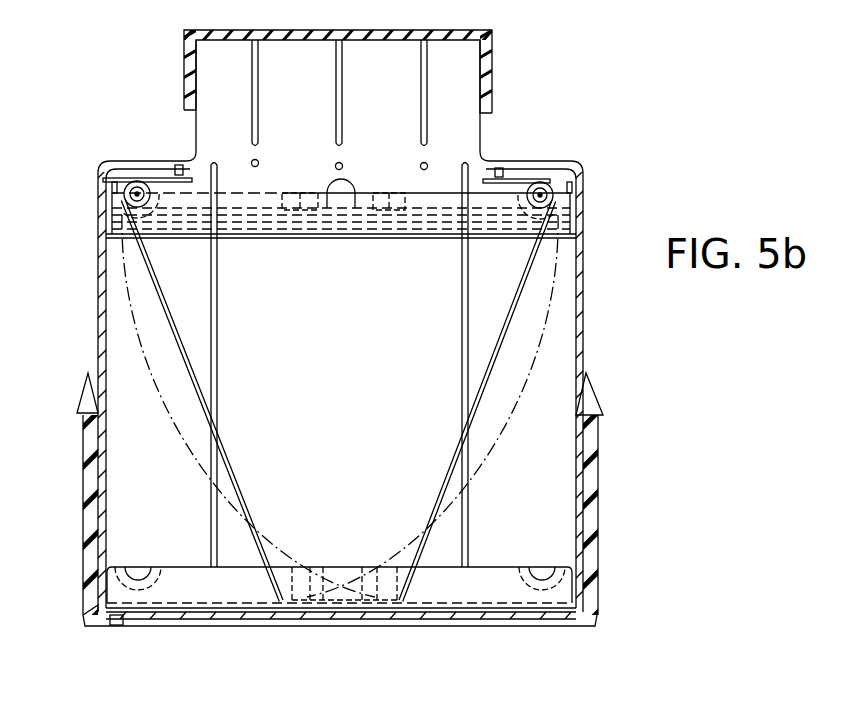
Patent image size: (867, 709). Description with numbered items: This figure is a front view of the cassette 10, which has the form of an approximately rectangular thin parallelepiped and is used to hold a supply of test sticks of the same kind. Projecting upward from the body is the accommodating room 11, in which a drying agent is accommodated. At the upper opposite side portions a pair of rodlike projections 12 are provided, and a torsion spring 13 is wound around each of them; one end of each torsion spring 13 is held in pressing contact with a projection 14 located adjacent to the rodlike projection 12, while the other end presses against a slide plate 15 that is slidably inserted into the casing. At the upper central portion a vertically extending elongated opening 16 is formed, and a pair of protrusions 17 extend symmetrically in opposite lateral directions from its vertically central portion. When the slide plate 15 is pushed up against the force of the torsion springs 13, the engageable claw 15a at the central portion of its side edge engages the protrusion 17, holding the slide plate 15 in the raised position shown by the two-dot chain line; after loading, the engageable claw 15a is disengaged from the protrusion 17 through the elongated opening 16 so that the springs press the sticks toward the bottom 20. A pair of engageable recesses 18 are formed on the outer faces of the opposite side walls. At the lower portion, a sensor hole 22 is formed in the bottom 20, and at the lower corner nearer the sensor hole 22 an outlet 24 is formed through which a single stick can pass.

The cassette 10 is at (587, 216).
The accommodating room 11 is at (458, 77).
The rodlike projection 12 is at (133, 180).
The torsion spring 13 is at (173, 338).
The projection 14 is at (178, 165).
The slide plate 15 is at (500, 588).
The engageable claw 15a is at (368, 567).
The elongated opening 16 is at (353, 178).
The protrusion 17 is at (283, 193).
The engageable recess 18 is at (82, 470).
The bottom 20 is at (387, 626).
The sensor hole 22 is at (114, 626).
The outlet 24 is at (82, 616).